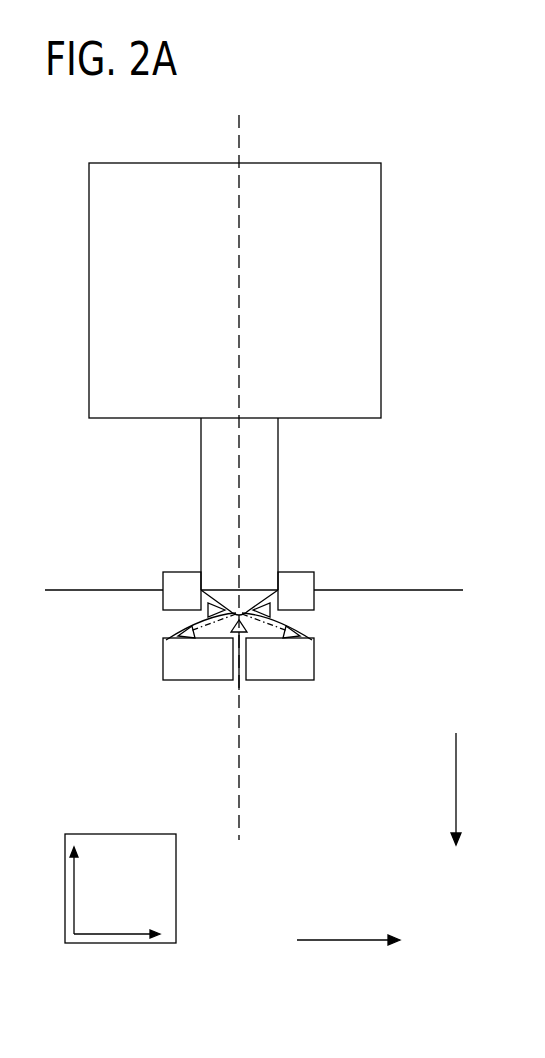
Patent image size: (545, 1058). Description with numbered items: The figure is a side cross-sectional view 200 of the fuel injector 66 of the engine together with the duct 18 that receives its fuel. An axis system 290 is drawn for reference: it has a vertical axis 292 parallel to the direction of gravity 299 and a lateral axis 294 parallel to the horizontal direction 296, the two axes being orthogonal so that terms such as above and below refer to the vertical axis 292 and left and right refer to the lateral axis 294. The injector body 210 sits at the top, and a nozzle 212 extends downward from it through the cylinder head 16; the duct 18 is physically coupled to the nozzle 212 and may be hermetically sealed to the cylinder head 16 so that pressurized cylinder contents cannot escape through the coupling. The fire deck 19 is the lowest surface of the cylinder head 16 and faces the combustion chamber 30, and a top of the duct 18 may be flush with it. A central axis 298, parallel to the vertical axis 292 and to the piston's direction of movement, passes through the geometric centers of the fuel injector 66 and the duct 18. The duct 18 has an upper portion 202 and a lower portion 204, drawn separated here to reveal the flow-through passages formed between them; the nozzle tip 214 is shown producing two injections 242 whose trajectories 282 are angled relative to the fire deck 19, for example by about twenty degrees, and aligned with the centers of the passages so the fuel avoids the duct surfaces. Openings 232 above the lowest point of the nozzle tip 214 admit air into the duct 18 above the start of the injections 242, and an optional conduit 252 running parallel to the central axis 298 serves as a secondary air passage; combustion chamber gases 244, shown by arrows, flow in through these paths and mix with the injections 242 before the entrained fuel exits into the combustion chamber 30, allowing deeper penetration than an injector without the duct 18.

The side cross-sectional view 200 is at (377, 49).
The fuel injector 66 is at (396, 116).
The injector body 210 is at (381, 292).
The nozzle 212 is at (278, 487).
The upper portion of the duct 202 is at (163, 570).
The duct 18 is at (313, 560).
The cylinder head 16 is at (423, 590).
The fire deck 19 is at (78, 604).
The nozzle tip 214 is at (238, 610).
The openings 232 is at (168, 608).
The injections 242 is at (160, 635).
The trajectories 282 is at (157, 643).
The combustion chamber gases 244 is at (182, 642).
The conduit 252 is at (247, 677).
The lower portion of the duct 204 is at (163, 680).
The combustion chamber 30 is at (347, 726).
The central axis 298 is at (240, 810).
The direction of gravity 299 is at (456, 772).
The horizontal direction 296 is at (345, 940).
The axis system 290 is at (136, 834).
The vertical axis 292 is at (92, 888).
The lateral axis 294 is at (122, 924).